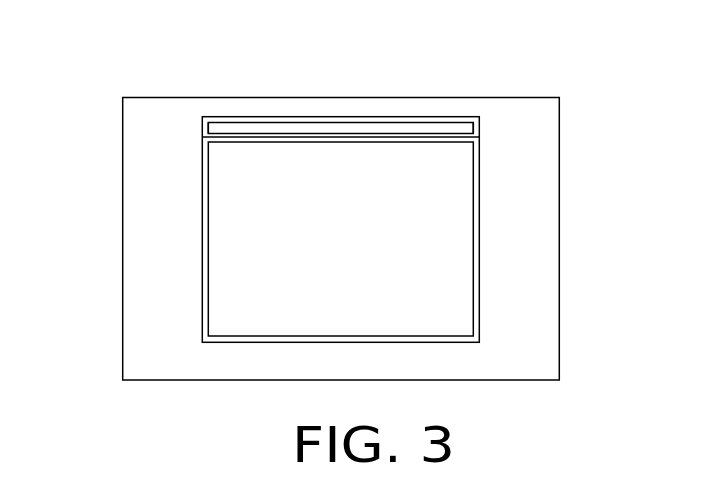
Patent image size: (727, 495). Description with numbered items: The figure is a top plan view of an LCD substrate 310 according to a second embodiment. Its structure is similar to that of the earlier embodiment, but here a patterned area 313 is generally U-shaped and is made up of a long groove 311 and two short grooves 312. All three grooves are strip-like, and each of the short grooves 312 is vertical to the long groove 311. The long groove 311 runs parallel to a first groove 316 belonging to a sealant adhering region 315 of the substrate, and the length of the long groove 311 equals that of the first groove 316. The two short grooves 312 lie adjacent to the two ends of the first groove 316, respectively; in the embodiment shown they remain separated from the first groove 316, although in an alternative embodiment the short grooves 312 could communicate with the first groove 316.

The LCD substrate 310 is at (301, 64).
The long groove 311 is at (407, 122).
The short grooves 312 is at (205, 127).
The patterned area 313 is at (483, 112).
The sealant adhering region 315 is at (485, 190).
The first groove 316 is at (447, 138).